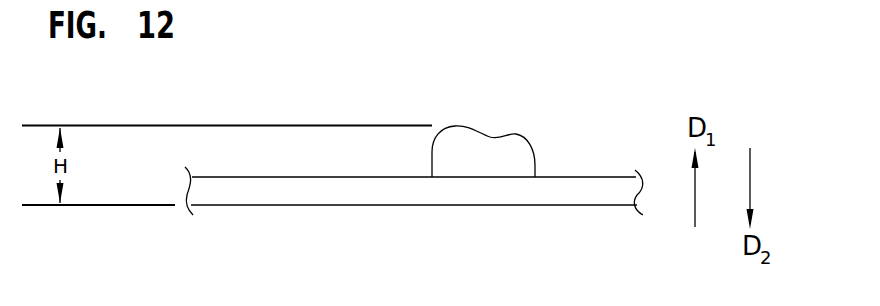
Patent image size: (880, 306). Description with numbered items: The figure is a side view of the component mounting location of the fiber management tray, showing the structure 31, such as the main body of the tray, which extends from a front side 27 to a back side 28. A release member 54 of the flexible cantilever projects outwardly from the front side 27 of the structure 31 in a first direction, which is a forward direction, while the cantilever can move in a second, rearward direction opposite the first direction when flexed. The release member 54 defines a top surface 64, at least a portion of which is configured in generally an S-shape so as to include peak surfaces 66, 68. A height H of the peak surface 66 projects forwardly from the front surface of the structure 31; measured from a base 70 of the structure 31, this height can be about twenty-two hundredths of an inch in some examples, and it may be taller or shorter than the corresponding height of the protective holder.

The front side 27 is at (273, 176).
The back side 28 is at (587, 206).
The structure 31 is at (516, 89).
The release member 54 is at (438, 158).
The top surface 64 is at (509, 131).
The peak surface 66 is at (457, 125).
The peak surface 68 is at (528, 140).
The base 70 is at (422, 192).